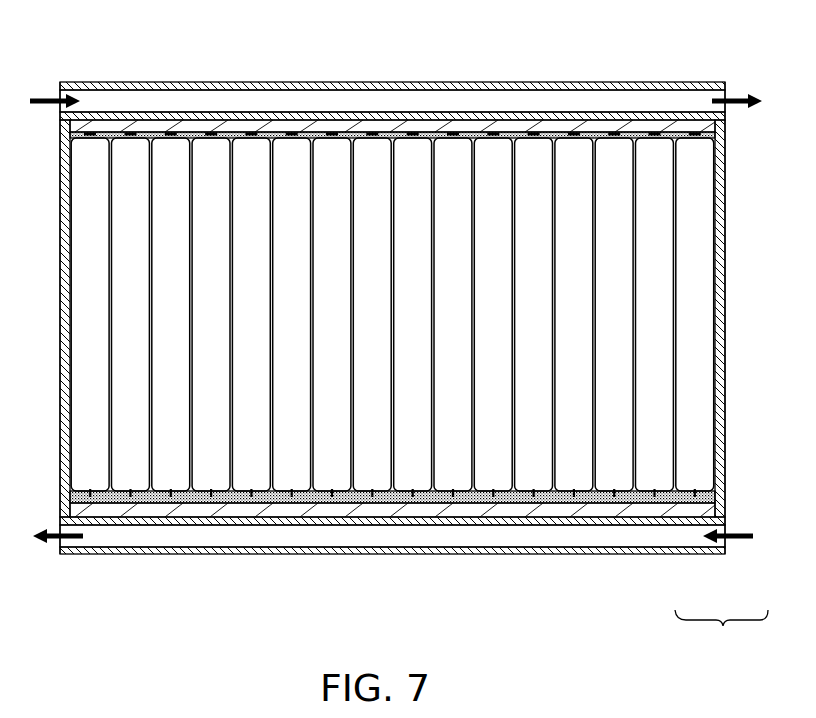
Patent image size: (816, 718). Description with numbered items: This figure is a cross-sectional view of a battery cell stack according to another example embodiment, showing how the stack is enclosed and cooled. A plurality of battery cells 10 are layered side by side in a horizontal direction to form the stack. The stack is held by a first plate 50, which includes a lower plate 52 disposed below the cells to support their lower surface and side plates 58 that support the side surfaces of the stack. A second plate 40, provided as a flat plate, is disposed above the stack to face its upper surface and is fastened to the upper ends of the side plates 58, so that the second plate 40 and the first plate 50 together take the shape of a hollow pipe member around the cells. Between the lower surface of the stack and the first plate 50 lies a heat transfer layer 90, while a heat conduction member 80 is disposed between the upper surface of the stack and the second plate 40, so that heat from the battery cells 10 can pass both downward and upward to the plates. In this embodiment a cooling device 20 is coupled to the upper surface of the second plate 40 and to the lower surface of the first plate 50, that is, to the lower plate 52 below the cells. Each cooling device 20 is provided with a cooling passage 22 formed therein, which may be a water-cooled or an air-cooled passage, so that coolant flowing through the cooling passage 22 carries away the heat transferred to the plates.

The battery cell 10 is at (658, 306).
The cooling device 20 is at (222, 85).
The cooling passage 22 is at (361, 100).
The second plate 40 is at (627, 124).
The first plate 50 is at (721, 630).
The lower plate 52 is at (688, 512).
The side plate 58 is at (724, 465).
The heat conduction member 80 is at (485, 134).
The heat transfer layer 90 is at (470, 497).